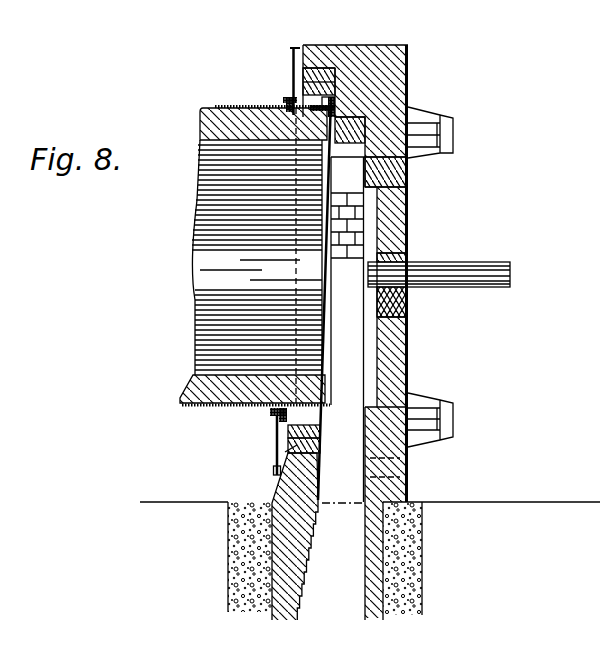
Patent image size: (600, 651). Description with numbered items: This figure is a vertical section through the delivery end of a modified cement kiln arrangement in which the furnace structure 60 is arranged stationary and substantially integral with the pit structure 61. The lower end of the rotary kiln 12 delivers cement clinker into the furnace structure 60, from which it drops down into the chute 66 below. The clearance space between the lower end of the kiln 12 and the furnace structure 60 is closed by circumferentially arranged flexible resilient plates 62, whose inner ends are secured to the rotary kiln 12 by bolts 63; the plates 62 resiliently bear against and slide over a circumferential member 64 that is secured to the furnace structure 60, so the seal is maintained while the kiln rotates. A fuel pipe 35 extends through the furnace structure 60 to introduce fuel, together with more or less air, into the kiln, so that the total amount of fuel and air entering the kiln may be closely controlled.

The kiln 12 is at (221, 116).
The fuel pipe 35 is at (449, 271).
The furnace structure 60 is at (401, 78).
The pit structure 61 is at (285, 542).
The flexible resilient plates 62 is at (293, 70).
The bolts 63 is at (270, 418).
The circumferential member 64 is at (294, 55).
The chute 66 is at (343, 543).